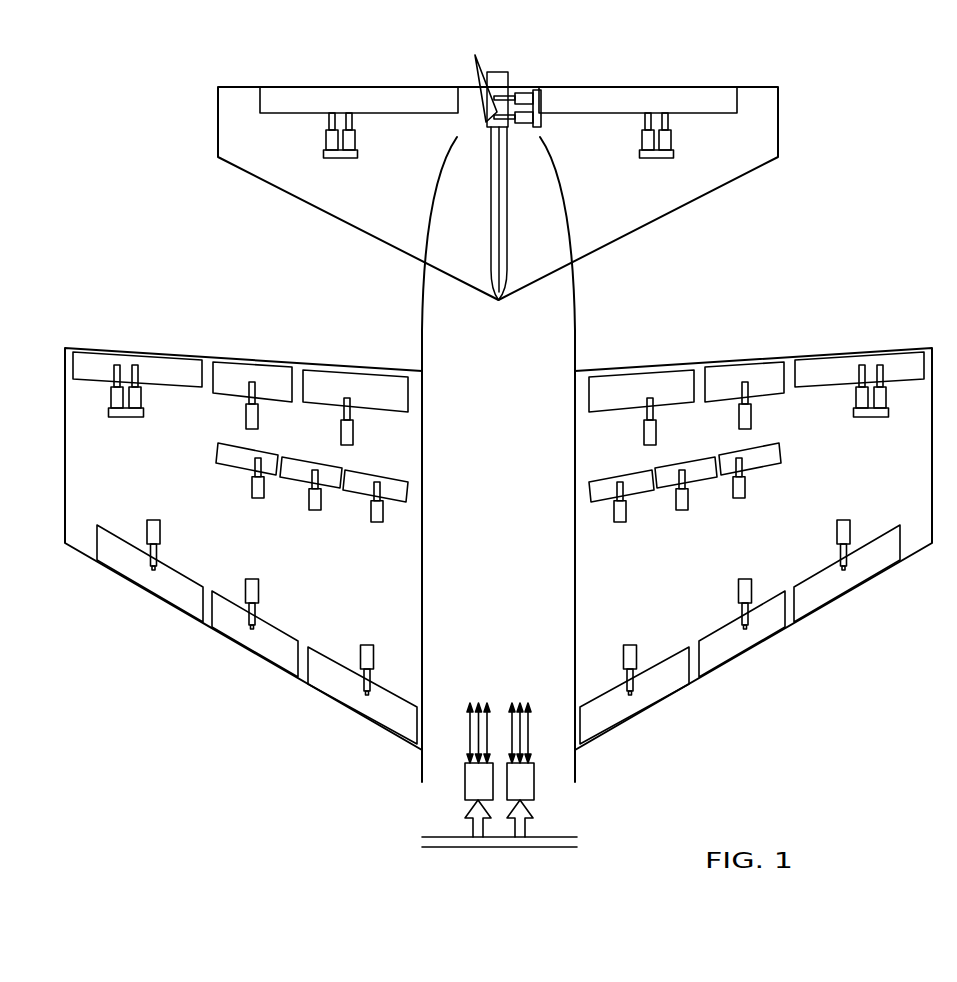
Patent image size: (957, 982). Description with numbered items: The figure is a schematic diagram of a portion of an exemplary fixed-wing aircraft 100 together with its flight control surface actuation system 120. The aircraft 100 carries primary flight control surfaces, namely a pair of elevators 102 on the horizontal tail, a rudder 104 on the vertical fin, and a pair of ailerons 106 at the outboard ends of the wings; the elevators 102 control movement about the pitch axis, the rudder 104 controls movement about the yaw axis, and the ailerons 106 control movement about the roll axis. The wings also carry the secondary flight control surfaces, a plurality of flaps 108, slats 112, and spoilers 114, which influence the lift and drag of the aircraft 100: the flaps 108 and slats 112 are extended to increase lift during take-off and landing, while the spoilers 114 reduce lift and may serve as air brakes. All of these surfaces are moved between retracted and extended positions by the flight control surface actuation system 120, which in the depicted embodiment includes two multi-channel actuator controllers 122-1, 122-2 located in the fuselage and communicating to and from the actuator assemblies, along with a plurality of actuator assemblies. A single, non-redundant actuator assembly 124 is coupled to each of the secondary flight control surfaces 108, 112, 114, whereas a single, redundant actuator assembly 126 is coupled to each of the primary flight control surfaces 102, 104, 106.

The aircraft 100 is at (116, 227).
The elevators 102 is at (305, 86).
The rudder 104 is at (484, 67).
The ailerons 106 is at (172, 362).
The flaps 108 is at (236, 370).
The slats 112 is at (166, 597).
The spoilers 114 is at (232, 464).
The flight control surface actuation system 120 is at (380, 770).
The multi-channel actuator controller 122-1 is at (465, 790).
The multi-channel actuator controller 122-2 is at (535, 790).
The non-redundant actuator assembly 124 is at (870, 508).
The redundant actuator assembly 126 is at (545, 119).